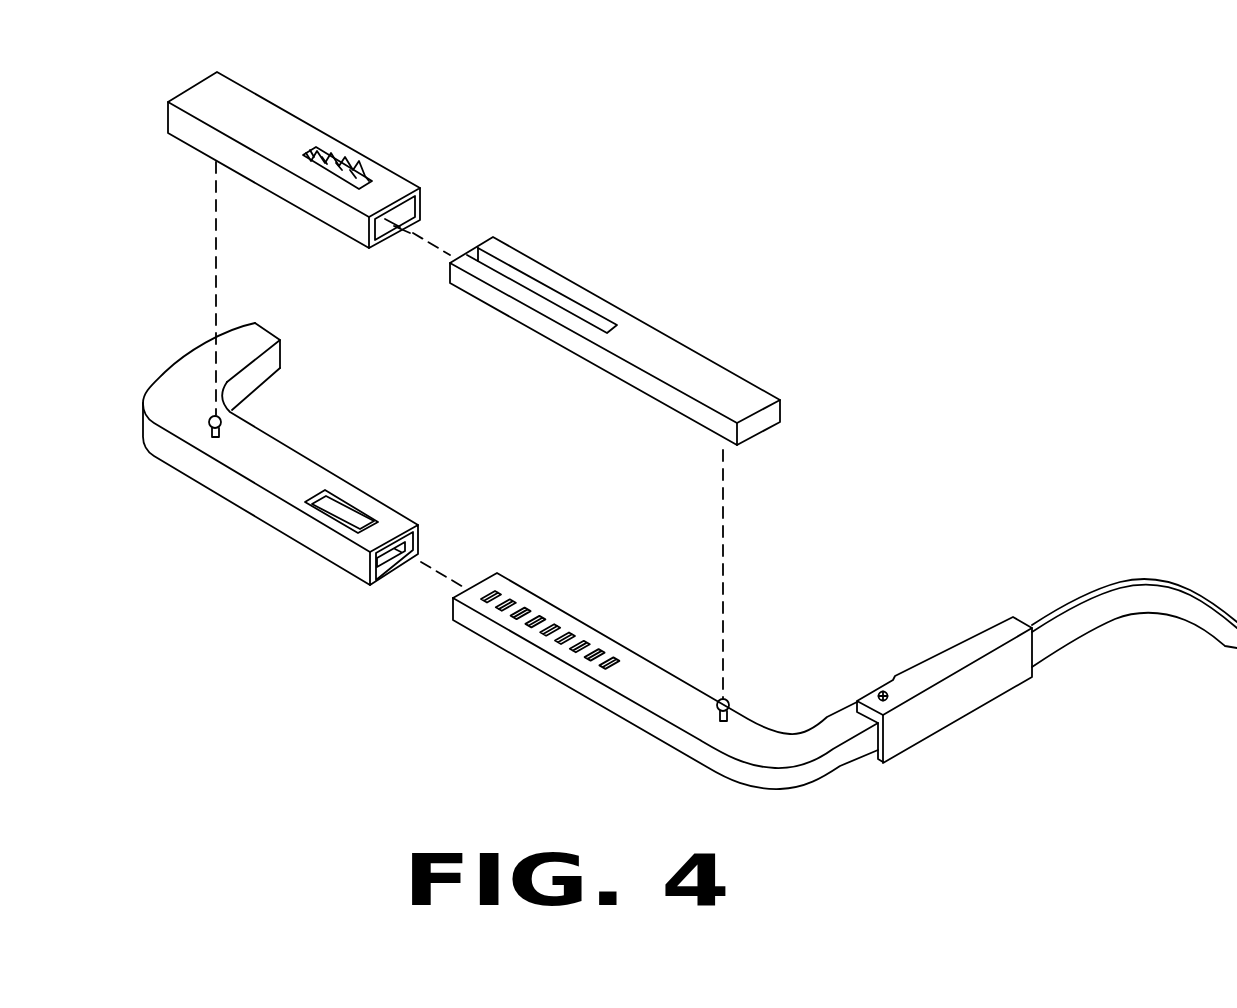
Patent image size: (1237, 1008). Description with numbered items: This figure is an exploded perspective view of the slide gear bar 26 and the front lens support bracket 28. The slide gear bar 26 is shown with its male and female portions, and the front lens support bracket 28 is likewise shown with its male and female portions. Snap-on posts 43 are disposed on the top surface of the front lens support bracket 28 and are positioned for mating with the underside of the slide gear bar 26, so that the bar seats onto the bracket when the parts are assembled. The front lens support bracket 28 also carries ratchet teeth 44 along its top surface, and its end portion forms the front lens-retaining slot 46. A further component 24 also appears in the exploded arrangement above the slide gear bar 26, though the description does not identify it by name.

The cover housing 24 is at (347, 162).
The slide gear bar 26 is at (702, 362).
The front lens support bracket 28 is at (672, 733).
The snap-on posts 43 is at (221, 418).
The ratchet teeth 44 is at (532, 597).
The front lens-retaining slot 46 is at (397, 568).